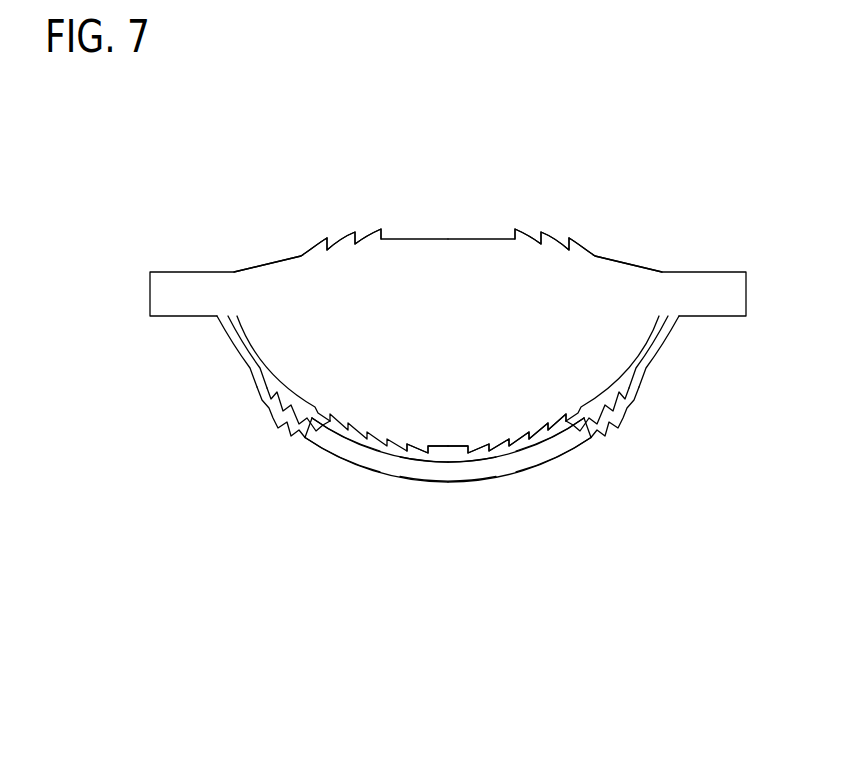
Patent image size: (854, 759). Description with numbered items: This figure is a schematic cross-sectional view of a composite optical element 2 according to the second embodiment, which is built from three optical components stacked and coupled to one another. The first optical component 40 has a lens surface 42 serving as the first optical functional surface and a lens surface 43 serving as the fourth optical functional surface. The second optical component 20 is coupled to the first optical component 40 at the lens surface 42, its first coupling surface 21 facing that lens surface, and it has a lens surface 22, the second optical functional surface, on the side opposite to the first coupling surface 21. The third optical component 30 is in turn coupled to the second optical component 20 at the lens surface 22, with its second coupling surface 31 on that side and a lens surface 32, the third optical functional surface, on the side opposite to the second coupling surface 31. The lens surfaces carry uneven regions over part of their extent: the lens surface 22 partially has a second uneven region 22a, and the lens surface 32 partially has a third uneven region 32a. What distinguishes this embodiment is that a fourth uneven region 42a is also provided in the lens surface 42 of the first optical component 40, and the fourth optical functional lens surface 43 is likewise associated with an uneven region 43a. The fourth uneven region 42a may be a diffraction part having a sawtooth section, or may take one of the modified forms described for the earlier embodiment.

The composite optical element 2 is at (576, 160).
The second optical component 20 is at (666, 338).
The first coupling surface 21 is at (653, 366).
The lens surface (second optical functional surface) 22 is at (587, 428).
The second uneven region 22a is at (256, 404).
The third optical component 30 is at (493, 468).
The second coupling surface 31 is at (404, 462).
The lens surface (third optical functional surface) 32 is at (343, 458).
The third uneven region 32a is at (264, 436).
The first optical component 40 is at (616, 262).
The lens surface (first optical functional surface) 42 is at (246, 336).
The fourth uneven region 42a is at (525, 455).
The lens surface (fourth optical functional surface) 43 is at (275, 258).
The fourth uneven region 43a is at (361, 208).